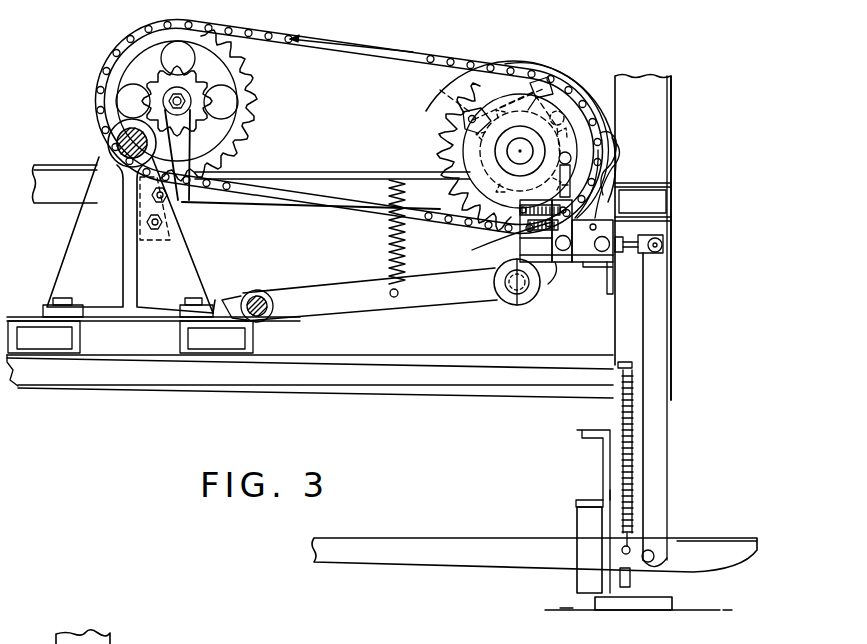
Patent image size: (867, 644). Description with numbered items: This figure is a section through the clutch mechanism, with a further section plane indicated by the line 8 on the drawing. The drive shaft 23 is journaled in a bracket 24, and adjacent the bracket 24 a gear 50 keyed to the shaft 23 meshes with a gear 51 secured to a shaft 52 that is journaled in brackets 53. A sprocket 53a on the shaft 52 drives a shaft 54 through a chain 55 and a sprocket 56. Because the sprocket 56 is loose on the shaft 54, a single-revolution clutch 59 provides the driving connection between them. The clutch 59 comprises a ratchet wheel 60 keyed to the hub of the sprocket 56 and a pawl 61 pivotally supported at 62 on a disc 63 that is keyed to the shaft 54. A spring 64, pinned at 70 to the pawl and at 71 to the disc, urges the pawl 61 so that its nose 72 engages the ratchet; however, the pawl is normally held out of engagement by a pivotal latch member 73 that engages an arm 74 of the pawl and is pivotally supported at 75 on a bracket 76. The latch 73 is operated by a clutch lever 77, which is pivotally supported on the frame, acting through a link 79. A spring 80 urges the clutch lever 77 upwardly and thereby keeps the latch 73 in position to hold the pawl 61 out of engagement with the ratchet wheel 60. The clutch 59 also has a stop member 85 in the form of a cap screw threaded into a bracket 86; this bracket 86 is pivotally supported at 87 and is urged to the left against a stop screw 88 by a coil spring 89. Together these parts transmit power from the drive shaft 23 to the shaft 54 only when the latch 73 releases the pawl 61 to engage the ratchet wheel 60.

The section line 8— 8 is at (522, 82).
The drive shaft 23 is at (110, 146).
The bracket 24 is at (198, 254).
The gear 50 is at (101, 133).
The gear 51 is at (164, 76).
The shaft 52 is at (187, 128).
The brackets 53 is at (184, 196).
The sprocket 53a is at (260, 106).
The shaft 54 is at (518, 153).
The chain 55 is at (418, 52).
The sprocket 56 is at (434, 122).
The single-revolution clutch 59 is at (548, 92).
The ratchet wheel 60 is at (514, 184).
The pawl 61 is at (547, 100).
The pivot 62 is at (574, 151).
The disc 63 is at (543, 207).
The spring 64 is at (503, 124).
The pin 70 is at (538, 80).
The pin 71 is at (440, 90).
The nose 72 is at (557, 107).
The latch member 73 is at (616, 180).
The arm 74 is at (604, 168).
The pivot 75 is at (620, 238).
The bracket 76 is at (561, 266).
The clutch lever 77 is at (500, 538).
The link 79 is at (669, 458).
The spring 80 is at (622, 461).
The stop member 85 is at (583, 173).
The bracket 86 is at (566, 231).
The pivot 87 is at (556, 266).
The stop screw 88 is at (512, 254).
The coil spring 89 is at (496, 236).